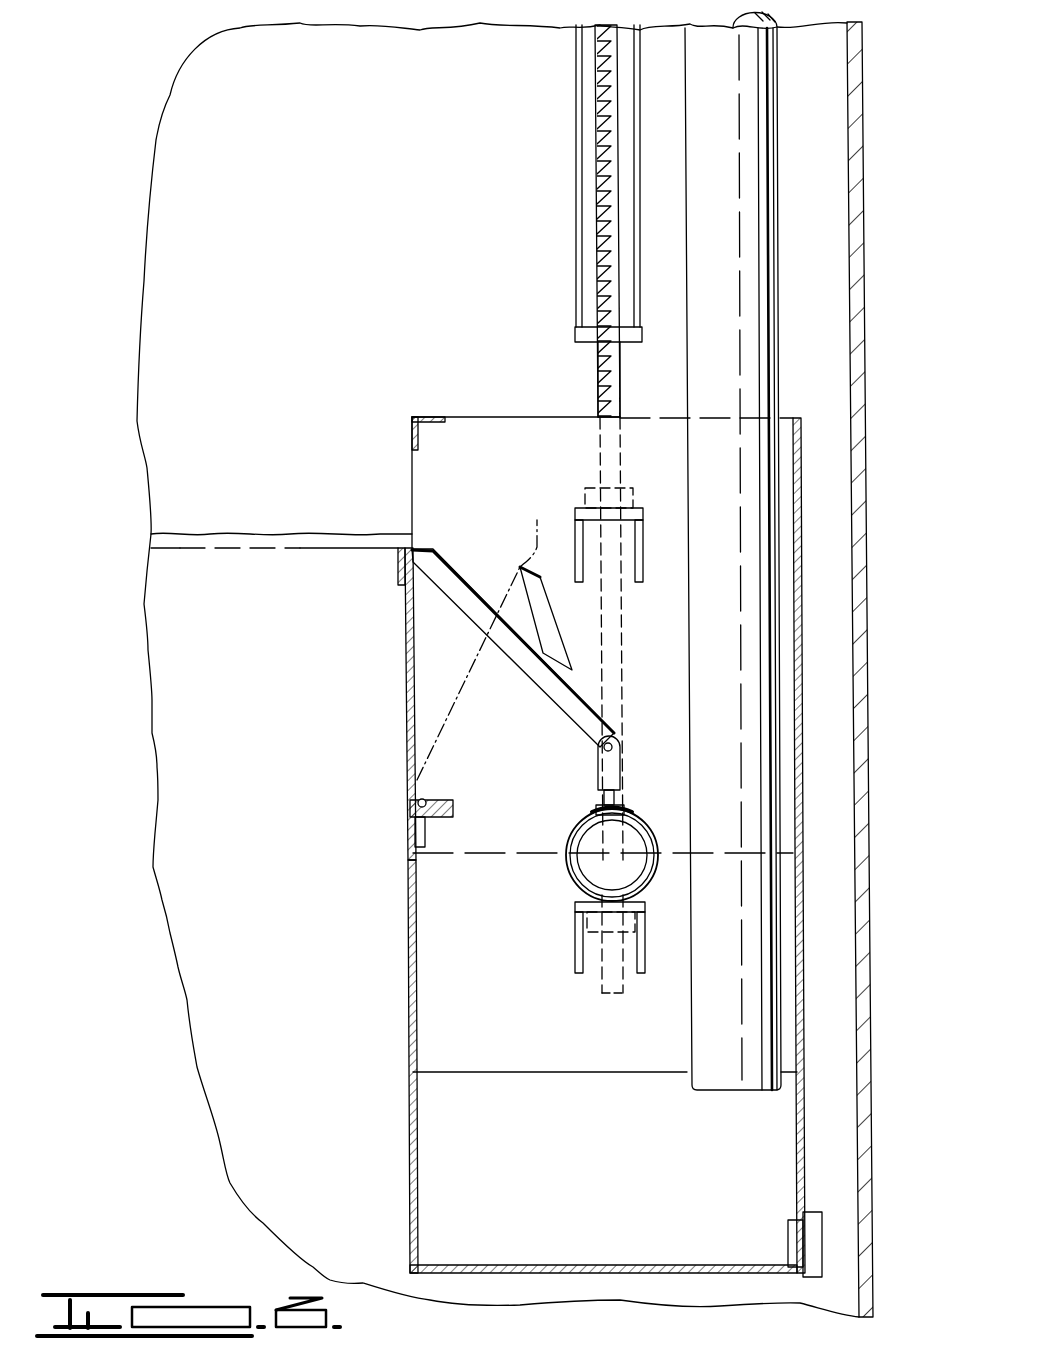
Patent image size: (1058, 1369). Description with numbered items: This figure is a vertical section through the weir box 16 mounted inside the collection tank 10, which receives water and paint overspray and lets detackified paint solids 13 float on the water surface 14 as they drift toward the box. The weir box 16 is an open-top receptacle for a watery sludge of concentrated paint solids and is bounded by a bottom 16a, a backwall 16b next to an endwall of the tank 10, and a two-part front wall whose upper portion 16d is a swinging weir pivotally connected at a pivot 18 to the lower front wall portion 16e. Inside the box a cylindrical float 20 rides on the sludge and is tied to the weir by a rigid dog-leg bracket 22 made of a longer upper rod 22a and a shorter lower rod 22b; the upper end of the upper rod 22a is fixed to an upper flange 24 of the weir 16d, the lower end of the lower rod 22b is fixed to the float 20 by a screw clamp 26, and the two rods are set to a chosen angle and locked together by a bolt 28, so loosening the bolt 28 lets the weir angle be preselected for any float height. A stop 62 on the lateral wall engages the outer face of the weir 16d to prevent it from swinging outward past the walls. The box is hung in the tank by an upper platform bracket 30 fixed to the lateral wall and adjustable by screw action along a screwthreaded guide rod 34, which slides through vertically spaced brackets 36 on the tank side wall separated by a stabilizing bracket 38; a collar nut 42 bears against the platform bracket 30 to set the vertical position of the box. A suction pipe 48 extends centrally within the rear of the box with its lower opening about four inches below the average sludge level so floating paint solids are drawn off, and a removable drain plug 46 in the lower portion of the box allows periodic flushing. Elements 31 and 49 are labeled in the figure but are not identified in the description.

The collection tank 10 is at (158, 140).
The paint solids 13 is at (160, 534).
The water surface 14 is at (262, 548).
The weir box 16 is at (810, 684).
The bottom 16a is at (555, 1275).
The backwall 16b is at (803, 728).
The upper front wall portion (swinging weir) 16d is at (406, 706).
The lower front wall portion 16e is at (408, 990).
The pivot connection 18 is at (408, 803).
The cylindrical float 20 is at (566, 855).
The dog-leg bracket 22 is at (547, 654).
The upper rod 22a is at (580, 700).
The lower rod 22b is at (622, 777).
The upper flange 24 is at (423, 548).
The screw clamp 26 is at (580, 821).
The bolt 28 is at (616, 748).
The upper platform bracket 30 is at (645, 542).
The lower fitting 31 is at (646, 945).
The screwthreaded guide rod 34 is at (598, 387).
The bracket 36 is at (598, 347).
The stabilizing bracket 38 is at (582, 160).
The collar nut 42 is at (636, 487).
The removable drain plug 46 is at (790, 1232).
The suction pipe 48 is at (752, 295).
The lower coupling 49 is at (578, 940).
The stop 62 is at (398, 560).